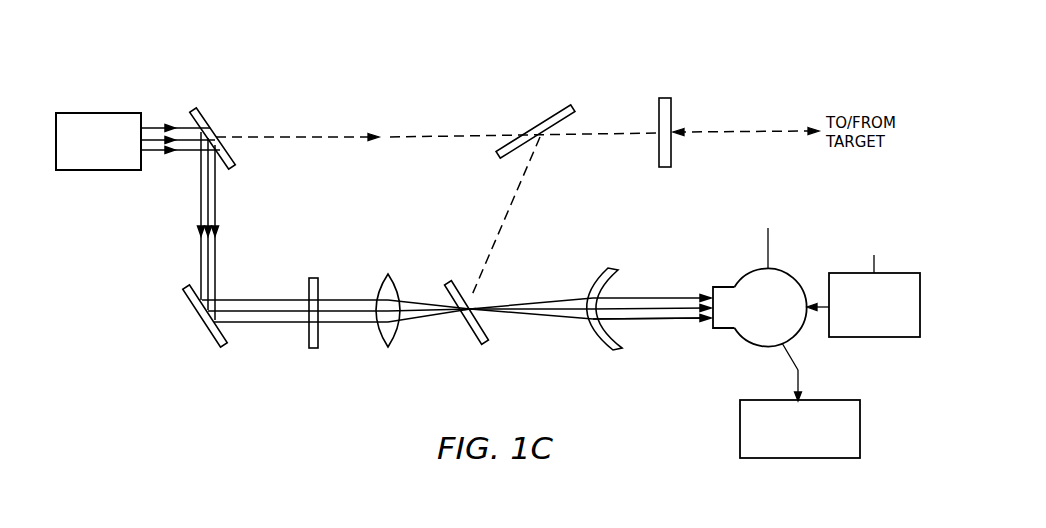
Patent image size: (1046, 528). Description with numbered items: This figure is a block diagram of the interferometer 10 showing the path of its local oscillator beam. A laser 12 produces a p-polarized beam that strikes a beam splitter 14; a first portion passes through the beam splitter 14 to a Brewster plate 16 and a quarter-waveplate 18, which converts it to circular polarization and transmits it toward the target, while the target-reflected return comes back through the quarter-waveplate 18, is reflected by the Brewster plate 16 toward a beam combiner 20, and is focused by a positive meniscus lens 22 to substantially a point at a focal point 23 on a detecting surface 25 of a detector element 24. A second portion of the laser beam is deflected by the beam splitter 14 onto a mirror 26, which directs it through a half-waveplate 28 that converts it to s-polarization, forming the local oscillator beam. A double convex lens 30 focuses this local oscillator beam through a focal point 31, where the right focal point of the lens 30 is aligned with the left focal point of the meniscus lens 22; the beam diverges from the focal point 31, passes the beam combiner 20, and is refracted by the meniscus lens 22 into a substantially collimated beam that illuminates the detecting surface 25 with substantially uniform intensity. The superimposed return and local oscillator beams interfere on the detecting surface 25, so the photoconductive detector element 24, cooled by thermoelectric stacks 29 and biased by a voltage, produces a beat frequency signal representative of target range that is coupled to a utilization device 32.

The interferometer 10 is at (366, 71).
The laser 12 is at (118, 112).
The beam splitter 14 is at (203, 116).
The Brewster plate 16 is at (563, 111).
The quarter-waveplate 18 is at (671, 101).
The beam combiner 20 is at (470, 336).
The meniscus lens 22 is at (598, 338).
The focal point 23 is at (712, 326).
The detector element 24 is at (706, 304).
The detecting surface 25 is at (712, 291).
The mirror 26 is at (210, 330).
The half-waveplate 28 is at (309, 332).
The thermoelectric stacks 29 is at (853, 337).
The double convex lens 30 is at (380, 336).
The focal point 31 is at (472, 311).
The utilization device 32 is at (740, 435).